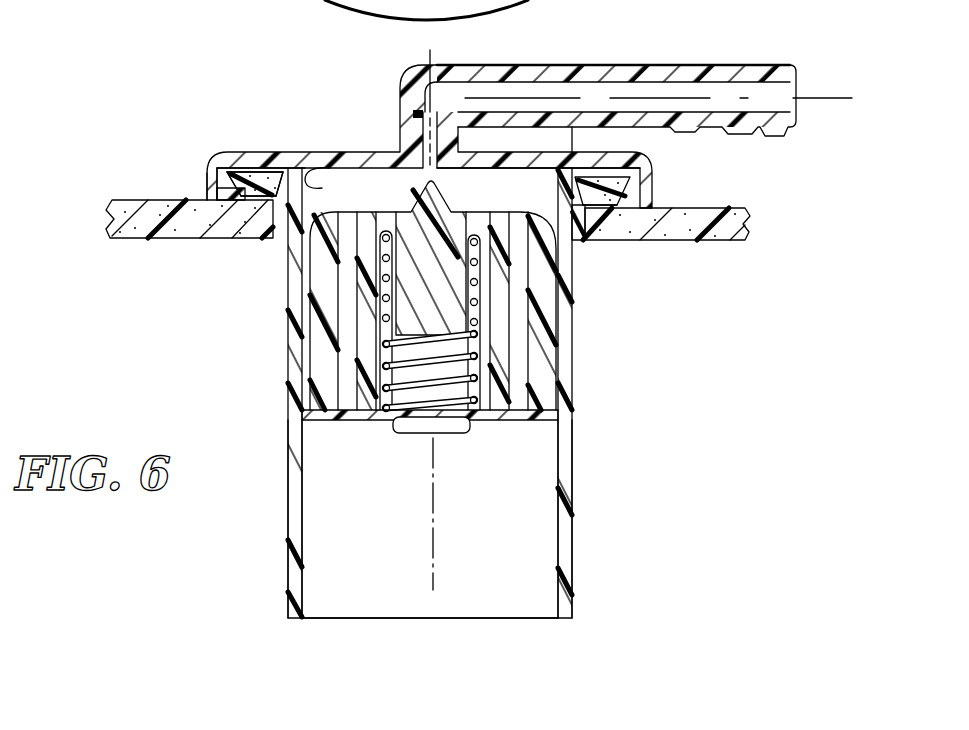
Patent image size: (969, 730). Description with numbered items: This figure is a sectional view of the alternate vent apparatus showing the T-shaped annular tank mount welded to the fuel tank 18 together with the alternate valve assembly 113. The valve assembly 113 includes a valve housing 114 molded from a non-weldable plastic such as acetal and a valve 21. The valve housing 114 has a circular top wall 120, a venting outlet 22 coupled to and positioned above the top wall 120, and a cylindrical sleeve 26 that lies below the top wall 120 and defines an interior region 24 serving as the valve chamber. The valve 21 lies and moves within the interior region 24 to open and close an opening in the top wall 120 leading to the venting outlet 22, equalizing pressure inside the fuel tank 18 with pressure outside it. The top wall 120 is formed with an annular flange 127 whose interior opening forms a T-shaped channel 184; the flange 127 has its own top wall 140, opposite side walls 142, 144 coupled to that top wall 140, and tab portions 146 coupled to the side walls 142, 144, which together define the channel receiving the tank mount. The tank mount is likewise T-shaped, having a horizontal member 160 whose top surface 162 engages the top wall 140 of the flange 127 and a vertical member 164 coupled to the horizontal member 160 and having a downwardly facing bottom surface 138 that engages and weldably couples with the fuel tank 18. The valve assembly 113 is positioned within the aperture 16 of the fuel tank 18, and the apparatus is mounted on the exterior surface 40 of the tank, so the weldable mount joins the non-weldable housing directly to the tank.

The aperture 16 is at (612, 292).
The fuel tank 18 is at (797, 227).
The valve 21 is at (340, 479).
The venting outlet 22 is at (683, 62).
The interior region 24 is at (347, 588).
The cylindrical sleeve 26 is at (290, 538).
The exterior surface 40 is at (113, 200).
The valve assembly 113 is at (728, 417).
The valve housing 114 is at (624, 539).
The top wall 120 is at (352, 78).
The annular flange 127 is at (275, 60).
The bottom surface 138 is at (136, 303).
The top wall 140 is at (228, 97).
The side wall 142 is at (137, 152).
The side wall 144 is at (321, 128).
The tab portions 146 is at (156, 175).
The horizontal member 160 is at (147, 70).
The top surface 162 is at (307, 89).
The vertical member 164 is at (242, 300).
The T-shaped channel 184 is at (197, 325).